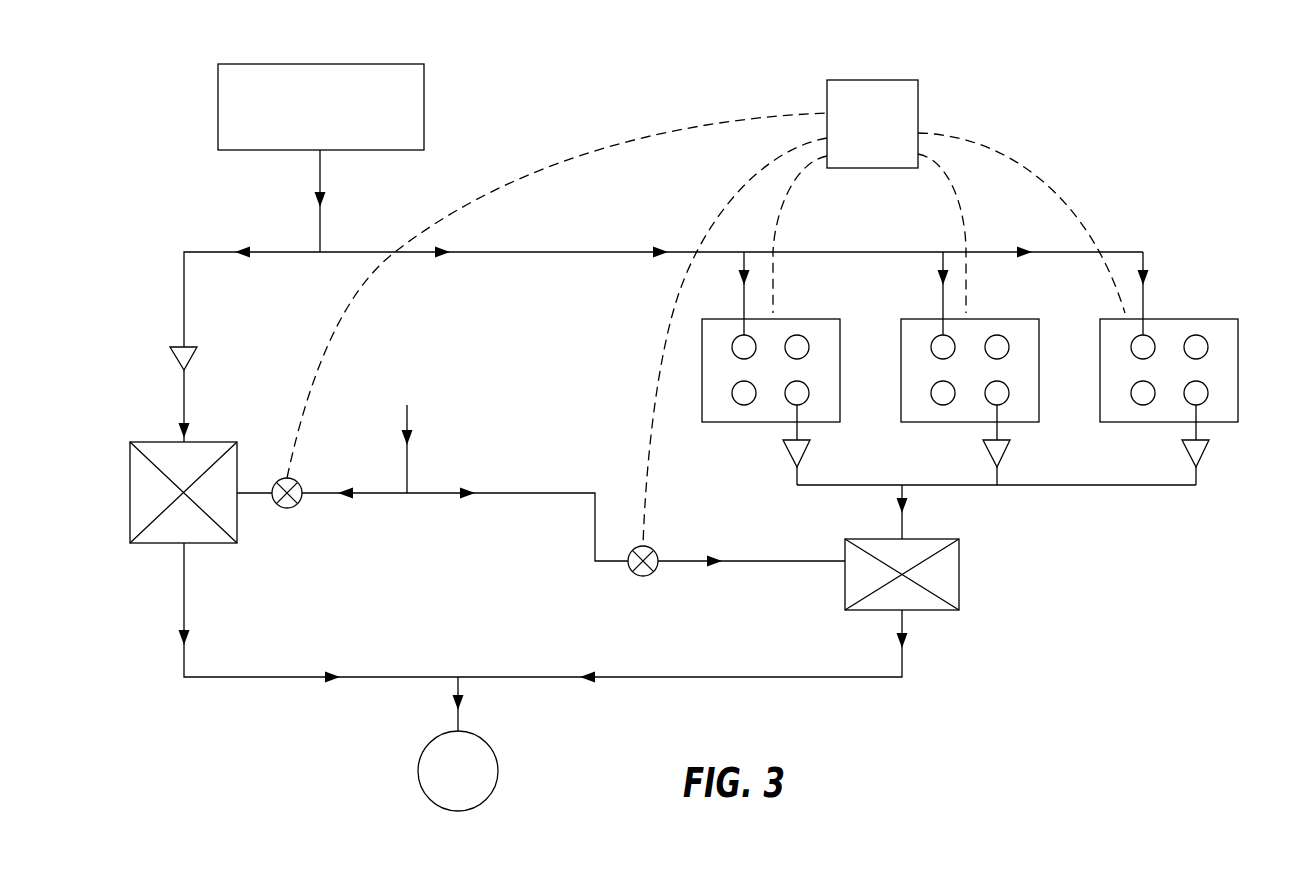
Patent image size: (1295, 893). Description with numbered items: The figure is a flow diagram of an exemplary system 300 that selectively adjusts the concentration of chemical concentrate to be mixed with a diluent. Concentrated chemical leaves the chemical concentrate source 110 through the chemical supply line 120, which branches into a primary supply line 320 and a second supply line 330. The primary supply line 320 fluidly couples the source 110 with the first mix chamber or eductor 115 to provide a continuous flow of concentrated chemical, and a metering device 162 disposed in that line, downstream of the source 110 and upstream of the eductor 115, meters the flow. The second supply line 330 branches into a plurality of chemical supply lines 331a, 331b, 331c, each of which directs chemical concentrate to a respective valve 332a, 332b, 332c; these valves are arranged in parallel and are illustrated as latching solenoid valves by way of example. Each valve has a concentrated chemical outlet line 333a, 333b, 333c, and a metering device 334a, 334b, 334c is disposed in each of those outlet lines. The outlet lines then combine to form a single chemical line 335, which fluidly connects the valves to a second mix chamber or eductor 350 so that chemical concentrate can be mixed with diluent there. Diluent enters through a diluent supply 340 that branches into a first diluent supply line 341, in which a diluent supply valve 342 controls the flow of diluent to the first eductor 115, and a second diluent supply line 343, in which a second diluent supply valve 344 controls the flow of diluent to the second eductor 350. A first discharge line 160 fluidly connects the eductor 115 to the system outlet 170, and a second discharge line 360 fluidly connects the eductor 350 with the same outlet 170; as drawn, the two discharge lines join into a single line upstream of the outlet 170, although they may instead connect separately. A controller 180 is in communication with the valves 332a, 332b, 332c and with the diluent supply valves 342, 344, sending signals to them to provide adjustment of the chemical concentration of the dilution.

The system 300 is at (118, 165).
The chemical concentrate source 110 is at (425, 95).
The chemical supply line 120 is at (322, 227).
The primary supply line 320 is at (215, 252).
The second supply line 330 is at (588, 252).
The metering device 162 is at (183, 400).
The first mix chamber or eductor 115 is at (130, 487).
The diluent supply valve 342 is at (289, 508).
The first diluent supply line 341 is at (375, 494).
The diluent supply 340 is at (408, 462).
The second diluent supply line 343 is at (526, 494).
The second diluent supply valve 344 is at (643, 577).
The second mix chamber or eductor 350 is at (960, 583).
The chemical line 335 is at (903, 525).
The second discharge line 360 is at (903, 662).
The first discharge line 160 is at (237, 678).
The system outlet 170 is at (420, 756).
The controller 180 is at (918, 103).
The chemical supply line 331a is at (742, 300).
The chemical supply line 331b is at (942, 300).
The chemical supply line 331c is at (1143, 300).
The valve 332a is at (702, 372).
The valve 332b is at (900, 372).
The valve 332c is at (1100, 372).
The concentrated chemical outlet line 333a is at (795, 478).
The concentrated chemical outlet line 333b is at (995, 478).
The concentrated chemical outlet line 333c is at (1195, 478).
The metering device 334a is at (804, 455).
The metering device 334b is at (1004, 455).
The metering device 334c is at (1203, 455).